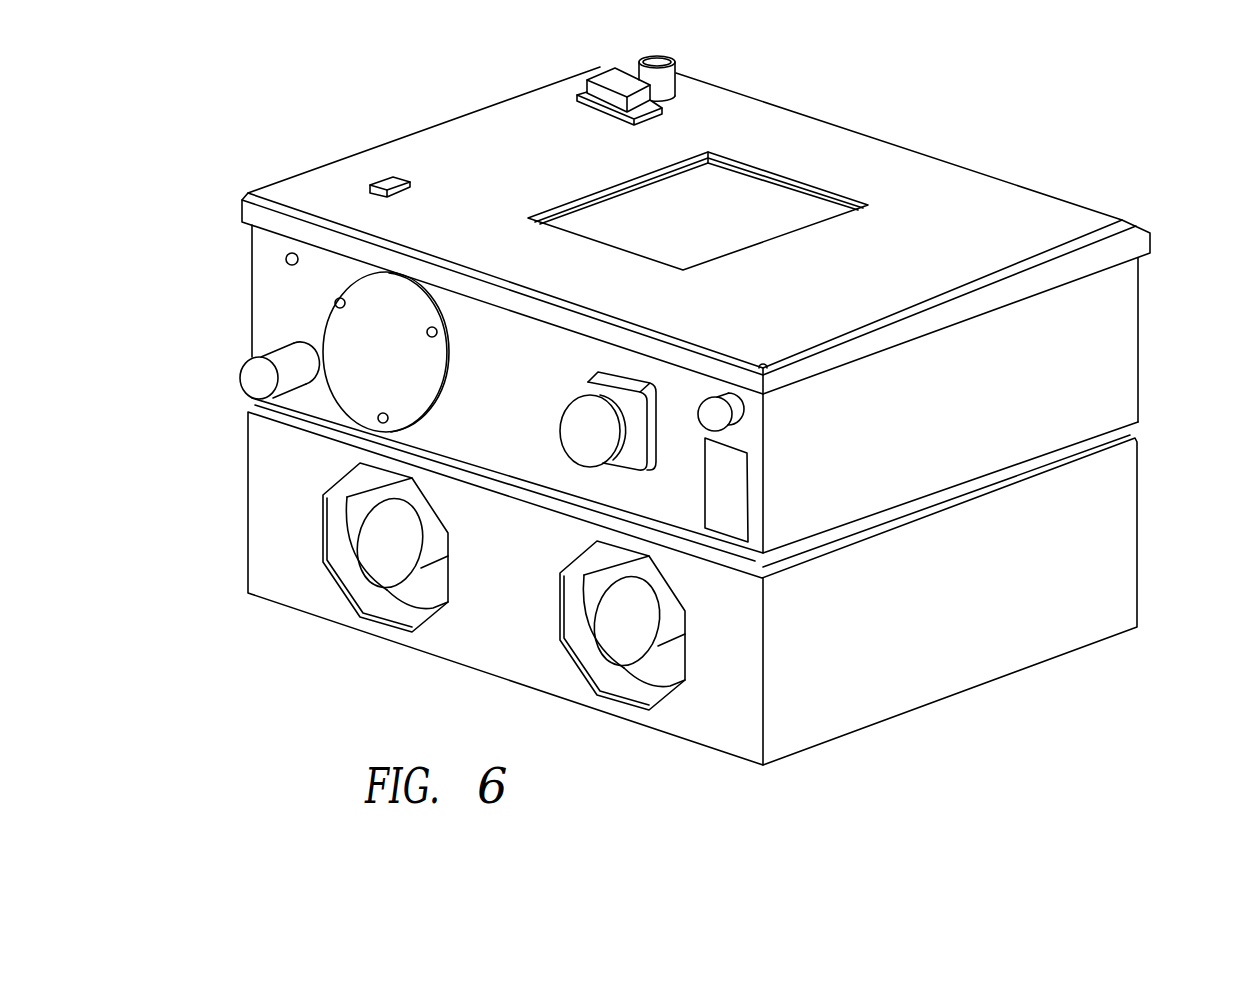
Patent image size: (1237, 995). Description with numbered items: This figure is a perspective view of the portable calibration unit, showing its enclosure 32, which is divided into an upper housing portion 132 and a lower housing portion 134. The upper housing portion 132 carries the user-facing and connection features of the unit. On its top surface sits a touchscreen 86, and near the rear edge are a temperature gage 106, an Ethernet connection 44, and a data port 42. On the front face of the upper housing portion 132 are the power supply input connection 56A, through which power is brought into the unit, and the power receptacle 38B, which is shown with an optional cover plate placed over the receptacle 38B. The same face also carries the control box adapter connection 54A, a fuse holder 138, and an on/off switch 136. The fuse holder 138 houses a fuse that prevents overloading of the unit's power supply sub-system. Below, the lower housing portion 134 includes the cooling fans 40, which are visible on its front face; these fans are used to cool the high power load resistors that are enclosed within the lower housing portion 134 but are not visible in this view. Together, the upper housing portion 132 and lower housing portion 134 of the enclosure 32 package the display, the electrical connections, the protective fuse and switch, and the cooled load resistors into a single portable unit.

The enclosure 32 is at (943, 115).
The power receptacle 38B is at (365, 385).
The cooling fans 40 is at (390, 545).
The data port 42 is at (387, 180).
The Ethernet connection 44 is at (602, 80).
The control box adapter connection 54A is at (587, 438).
The power supply input connection 56A is at (257, 377).
The touchscreen 86 is at (743, 195).
The temperature gage 106 is at (667, 57).
The upper housing portion 132 is at (1123, 213).
The lower housing portion 134 is at (1105, 637).
The on/off switch 136 is at (740, 487).
The fuse holder 138 is at (712, 416).